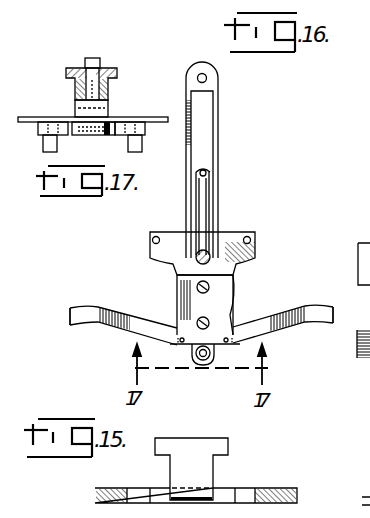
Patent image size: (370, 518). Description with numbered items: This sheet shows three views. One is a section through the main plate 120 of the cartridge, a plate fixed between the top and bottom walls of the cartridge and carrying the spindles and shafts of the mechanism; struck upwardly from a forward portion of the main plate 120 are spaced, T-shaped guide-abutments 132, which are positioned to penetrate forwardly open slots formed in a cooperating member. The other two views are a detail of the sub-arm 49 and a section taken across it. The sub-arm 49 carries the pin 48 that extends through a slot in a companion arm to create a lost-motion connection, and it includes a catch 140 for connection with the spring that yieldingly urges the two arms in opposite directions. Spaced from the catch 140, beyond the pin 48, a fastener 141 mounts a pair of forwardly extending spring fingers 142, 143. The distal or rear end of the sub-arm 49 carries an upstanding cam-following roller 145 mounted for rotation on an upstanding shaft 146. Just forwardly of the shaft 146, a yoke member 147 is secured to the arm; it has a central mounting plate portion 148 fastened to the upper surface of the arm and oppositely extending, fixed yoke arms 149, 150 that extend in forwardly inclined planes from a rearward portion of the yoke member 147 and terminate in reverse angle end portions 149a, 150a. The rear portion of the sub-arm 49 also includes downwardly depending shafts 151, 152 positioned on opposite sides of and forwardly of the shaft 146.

In FIG. 16, the pin 48 is at (201, 72).
In FIG. 17, the sub-arm 49 is at (76, 136).
In FIG. 16, the sub-arm 49 is at (216, 132).
In FIG. 15, the main plate 120 is at (290, 488).
In FIG. 15, the T-shaped guide-abutments 132 is at (228, 447).
In FIG. 16, the catch 140 is at (205, 170).
In FIG. 16, the fastener 141 is at (162, 262).
In FIG. 16, the spring finger 142 is at (196, 206).
In FIG. 16, the spring finger 143 is at (211, 209).
In FIG. 17, the cam-following roller 145 is at (110, 81).
In FIG. 16, the cam-following roller 145 is at (204, 363).
In FIG. 17, the upstanding shaft 146 is at (96, 60).
In FIG. 16, the yoke member 147 is at (236, 291).
In FIG. 17, the central mounting plate portion 148 is at (49, 104).
In FIG. 16, the central mounting plate portion 148 is at (186, 296).
In FIG. 16, the yoke arm 149 is at (120, 332).
In FIG. 16, the reverse angle end portion 149a is at (73, 307).
In FIG. 16, the yoke arm 150 is at (291, 330).
In FIG. 16, the reverse angle end portion 150a is at (340, 295).
In FIG. 17, the downwardly depending shaft 151 is at (48, 152).
In FIG. 17, the downwardly depending shaft 152 is at (141, 143).